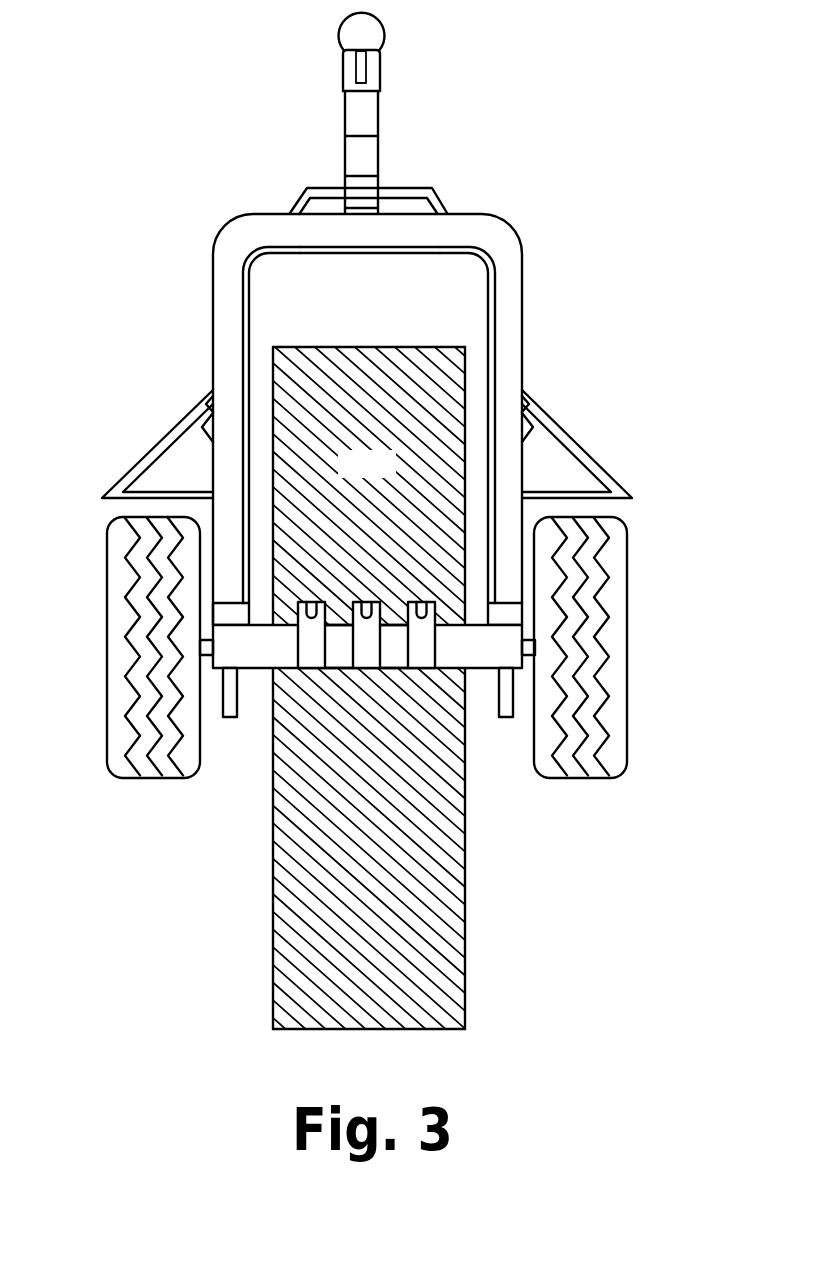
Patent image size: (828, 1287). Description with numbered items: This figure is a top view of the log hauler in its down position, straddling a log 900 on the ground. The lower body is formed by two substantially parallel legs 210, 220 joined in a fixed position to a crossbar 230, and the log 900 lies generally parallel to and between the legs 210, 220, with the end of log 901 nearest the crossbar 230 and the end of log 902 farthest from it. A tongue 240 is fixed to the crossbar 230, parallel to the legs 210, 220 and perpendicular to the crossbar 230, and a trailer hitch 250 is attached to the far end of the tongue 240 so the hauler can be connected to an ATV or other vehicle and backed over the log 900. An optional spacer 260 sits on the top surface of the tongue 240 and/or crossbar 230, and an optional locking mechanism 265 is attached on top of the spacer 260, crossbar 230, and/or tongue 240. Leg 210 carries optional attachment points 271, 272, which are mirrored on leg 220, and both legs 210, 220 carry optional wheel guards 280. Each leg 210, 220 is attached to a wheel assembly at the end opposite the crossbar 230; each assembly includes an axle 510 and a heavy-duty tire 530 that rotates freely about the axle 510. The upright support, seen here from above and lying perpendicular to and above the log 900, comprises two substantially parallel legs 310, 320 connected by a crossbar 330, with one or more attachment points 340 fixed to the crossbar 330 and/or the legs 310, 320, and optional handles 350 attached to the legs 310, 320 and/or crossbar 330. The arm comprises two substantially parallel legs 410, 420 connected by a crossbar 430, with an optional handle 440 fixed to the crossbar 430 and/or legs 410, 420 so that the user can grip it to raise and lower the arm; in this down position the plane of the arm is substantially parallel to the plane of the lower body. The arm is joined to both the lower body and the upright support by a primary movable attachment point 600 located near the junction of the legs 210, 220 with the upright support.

The leg 210 is at (251, 340).
The leg 220 is at (487, 340).
The crossbar 230 is at (354, 258).
The tongue 240 is at (356, 110).
The trailer hitch 250 is at (356, 28).
The spacer 260 is at (356, 157).
The locking mechanism 265 is at (371, 176).
The attachment point 271 is at (206, 423).
The attachment point 272 is at (206, 396).
The wheel guard 280 is at (133, 467).
The leg 310 is at (262, 653).
The leg 320 is at (476, 653).
The crossbar 330 is at (338, 660).
The attachment point 340 is at (312, 649).
The handle 350 is at (224, 705).
The leg 410 is at (222, 340).
The leg 420 is at (515, 336).
The crossbar 430 is at (378, 226).
The handle 440 is at (329, 189).
The axle 510 is at (200, 647).
The tire 530 is at (123, 580).
The primary movable attachment point 600 is at (228, 607).
The log 900 is at (369, 688).
The end of log 901 is at (409, 344).
The end of log 902 is at (337, 1031).